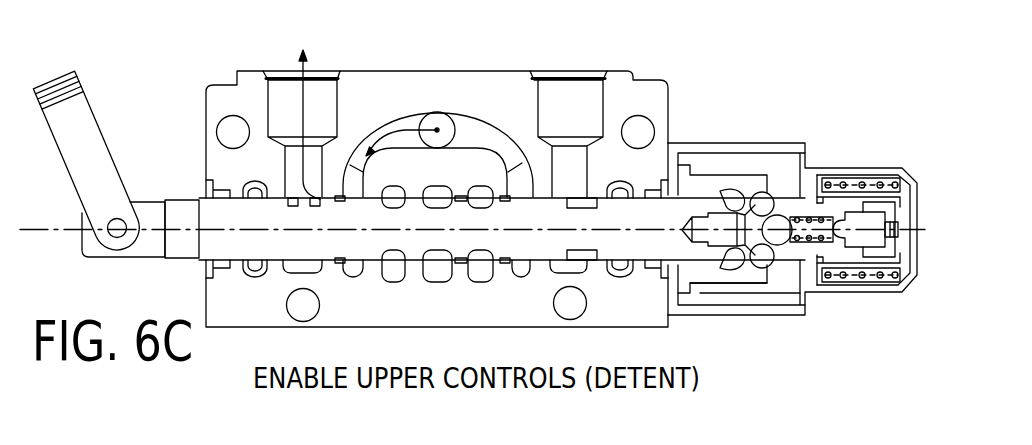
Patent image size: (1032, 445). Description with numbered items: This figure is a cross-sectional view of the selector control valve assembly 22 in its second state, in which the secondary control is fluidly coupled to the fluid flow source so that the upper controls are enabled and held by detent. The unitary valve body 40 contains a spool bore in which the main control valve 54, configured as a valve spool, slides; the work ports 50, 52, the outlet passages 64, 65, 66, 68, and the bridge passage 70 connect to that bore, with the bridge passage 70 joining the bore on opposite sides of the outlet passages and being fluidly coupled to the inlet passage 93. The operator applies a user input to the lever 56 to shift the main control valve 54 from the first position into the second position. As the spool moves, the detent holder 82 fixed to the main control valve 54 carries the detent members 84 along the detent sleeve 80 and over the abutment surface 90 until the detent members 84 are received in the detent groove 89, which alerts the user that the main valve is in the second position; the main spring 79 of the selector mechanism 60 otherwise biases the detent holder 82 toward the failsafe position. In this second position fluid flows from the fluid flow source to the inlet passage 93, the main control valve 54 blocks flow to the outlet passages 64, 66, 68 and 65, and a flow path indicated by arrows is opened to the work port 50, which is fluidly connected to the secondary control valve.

The selector control valve assembly 22 is at (199, 56).
The valve body 40 is at (647, 100).
The work port 50 is at (322, 72).
The work port 52 is at (577, 72).
The main control valve 54 is at (595, 250).
The lever 56 is at (80, 100).
The selector mechanism 60 is at (897, 147).
The outlet passage 64 is at (390, 280).
The outlet passage 65 is at (253, 272).
The outlet passage 66 is at (438, 278).
The outlet passage 68 is at (480, 280).
The bridge passage 70 is at (468, 132).
The main spring 79 is at (845, 180).
The detent sleeve 80 is at (742, 274).
The detent holder 82 is at (720, 238).
The detent members 84 is at (783, 203).
The detent groove 89 is at (763, 191).
The abutment surface 90 is at (732, 202).
The inlet passage 93 is at (437, 112).